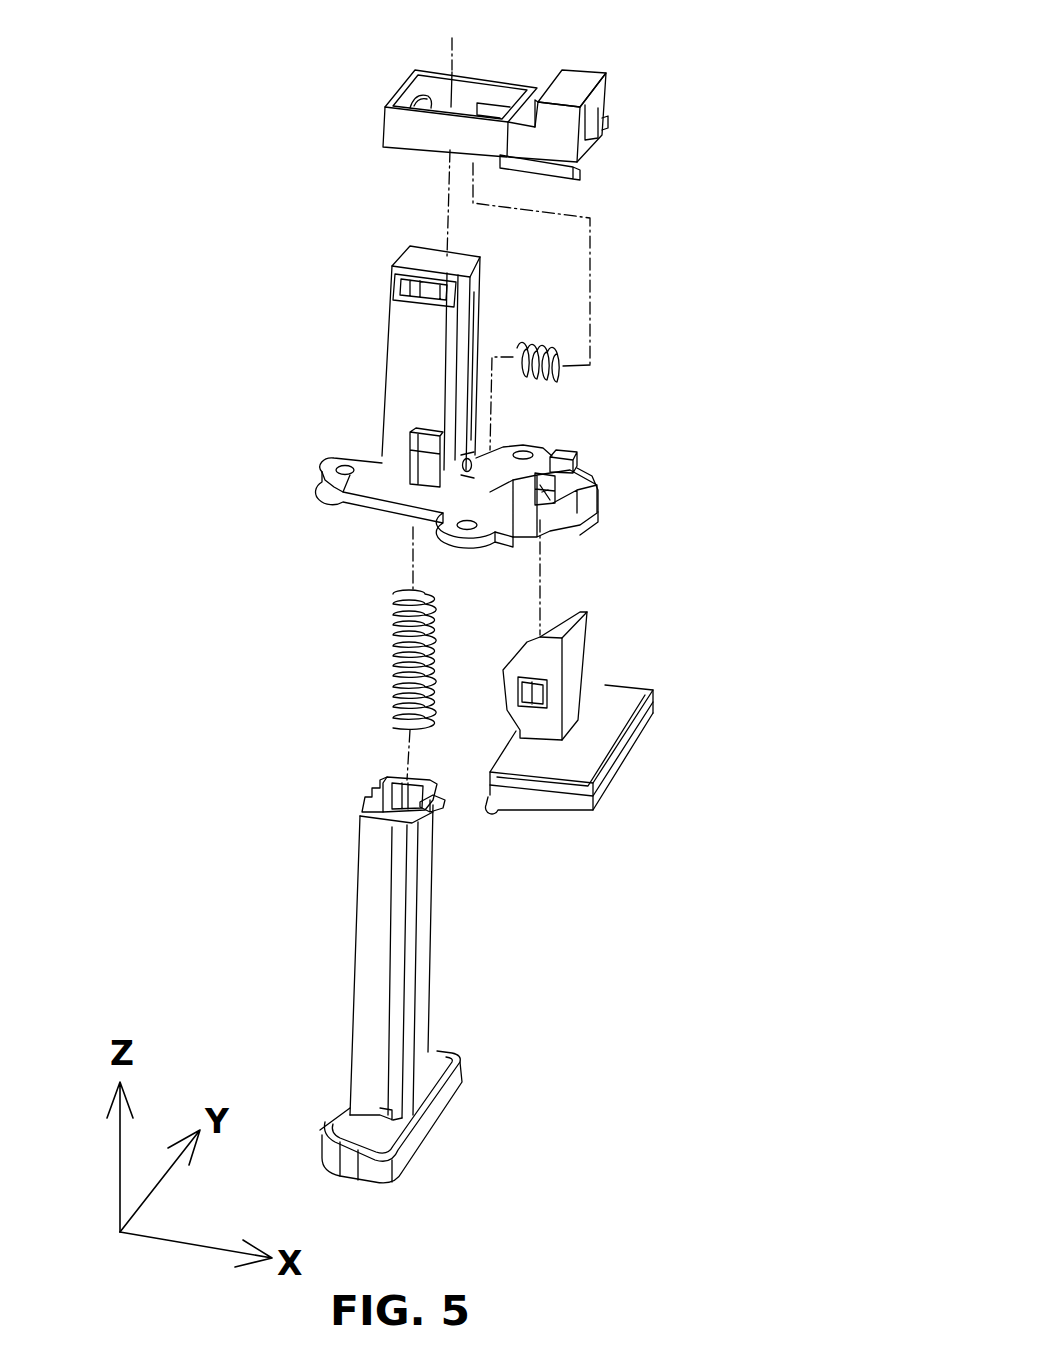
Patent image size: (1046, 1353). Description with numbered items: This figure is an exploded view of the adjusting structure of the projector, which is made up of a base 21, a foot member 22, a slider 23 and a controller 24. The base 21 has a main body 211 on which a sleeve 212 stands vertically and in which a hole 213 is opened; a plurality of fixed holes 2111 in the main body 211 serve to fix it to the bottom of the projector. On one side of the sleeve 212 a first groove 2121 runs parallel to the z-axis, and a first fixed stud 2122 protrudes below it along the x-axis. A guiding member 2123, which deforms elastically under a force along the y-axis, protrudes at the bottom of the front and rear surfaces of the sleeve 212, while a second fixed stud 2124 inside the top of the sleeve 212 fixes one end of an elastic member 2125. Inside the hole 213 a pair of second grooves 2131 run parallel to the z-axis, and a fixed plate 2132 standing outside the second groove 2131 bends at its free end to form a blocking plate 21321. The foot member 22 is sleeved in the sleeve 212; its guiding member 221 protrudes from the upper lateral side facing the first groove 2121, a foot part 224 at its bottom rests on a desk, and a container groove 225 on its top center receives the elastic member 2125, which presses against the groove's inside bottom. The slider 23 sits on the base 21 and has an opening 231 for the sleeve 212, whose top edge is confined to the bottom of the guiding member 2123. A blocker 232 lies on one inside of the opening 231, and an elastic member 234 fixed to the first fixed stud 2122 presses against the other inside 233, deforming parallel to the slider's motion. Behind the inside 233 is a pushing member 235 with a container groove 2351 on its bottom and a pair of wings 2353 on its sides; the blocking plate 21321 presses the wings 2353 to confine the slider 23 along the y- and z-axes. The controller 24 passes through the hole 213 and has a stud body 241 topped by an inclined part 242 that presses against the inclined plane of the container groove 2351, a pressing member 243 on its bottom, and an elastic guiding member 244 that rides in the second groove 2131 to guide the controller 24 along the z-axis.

The base 21 is at (431, 476).
The main body 211 is at (400, 470).
The fixed holes 2111 is at (347, 461).
The sleeve 212 is at (472, 403).
The first groove 2121 is at (470, 308).
The first fixed stud 2122 is at (480, 460).
The guiding member 2123 is at (412, 452).
The second fixed stud 2124 is at (403, 279).
The elastic member 2125 is at (393, 660).
The hole 213 is at (582, 532).
The second grooves 2131 is at (577, 463).
The fixed plate 2132 is at (540, 518).
The blocking plate 21321 is at (541, 498).
The foot member 22 is at (373, 959).
The guiding member 221 is at (443, 806).
The foot part 224 is at (412, 1129).
The container groove 225 is at (403, 772).
The slider 23 is at (492, 115).
The opening 231 is at (462, 93).
The blocker 232 is at (430, 92).
The inside 233 is at (513, 85).
The elastic member 234 is at (557, 380).
The pushing member 235 is at (681, 114).
The container groove 2351 is at (607, 130).
The wings 2353 is at (573, 173).
The controller 24 is at (666, 696).
The stud body 241 is at (639, 659).
The inclined part 242 is at (568, 616).
The pressing member 243 is at (600, 772).
The elastic guiding member 244 is at (547, 690).